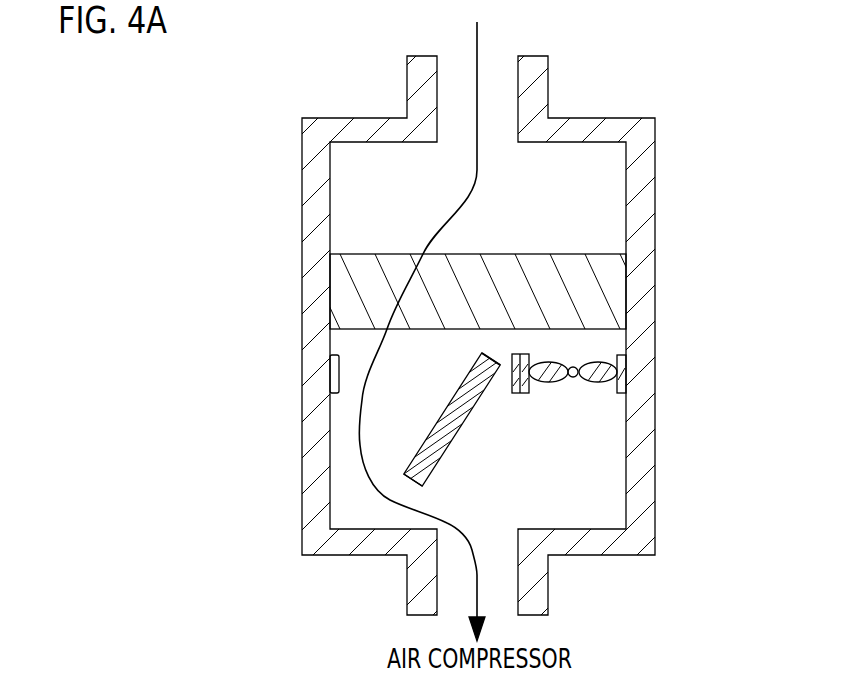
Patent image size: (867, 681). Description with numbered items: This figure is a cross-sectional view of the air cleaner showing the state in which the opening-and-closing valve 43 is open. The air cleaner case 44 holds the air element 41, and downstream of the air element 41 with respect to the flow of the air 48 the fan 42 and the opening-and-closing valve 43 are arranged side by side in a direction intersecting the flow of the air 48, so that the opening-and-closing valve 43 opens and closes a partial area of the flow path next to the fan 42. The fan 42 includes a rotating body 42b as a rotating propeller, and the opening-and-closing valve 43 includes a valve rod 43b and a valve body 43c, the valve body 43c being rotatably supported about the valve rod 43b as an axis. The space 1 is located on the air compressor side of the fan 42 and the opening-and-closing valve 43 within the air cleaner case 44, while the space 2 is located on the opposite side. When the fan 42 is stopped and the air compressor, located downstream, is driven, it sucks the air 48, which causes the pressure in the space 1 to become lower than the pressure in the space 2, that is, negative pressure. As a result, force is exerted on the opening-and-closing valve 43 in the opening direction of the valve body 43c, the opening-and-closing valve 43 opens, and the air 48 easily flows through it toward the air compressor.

The space 1 is at (595, 473).
The space 2 is at (595, 213).
The air element 41 is at (607, 293).
The fan 42 is at (600, 363).
The rotating body 42b is at (617, 387).
The opening-and-closing valve 43 is at (412, 430).
The valve rod 43b is at (473, 362).
The valve body 43c is at (422, 457).
The air cleaner case 44 is at (640, 167).
The air 48 is at (477, 30).